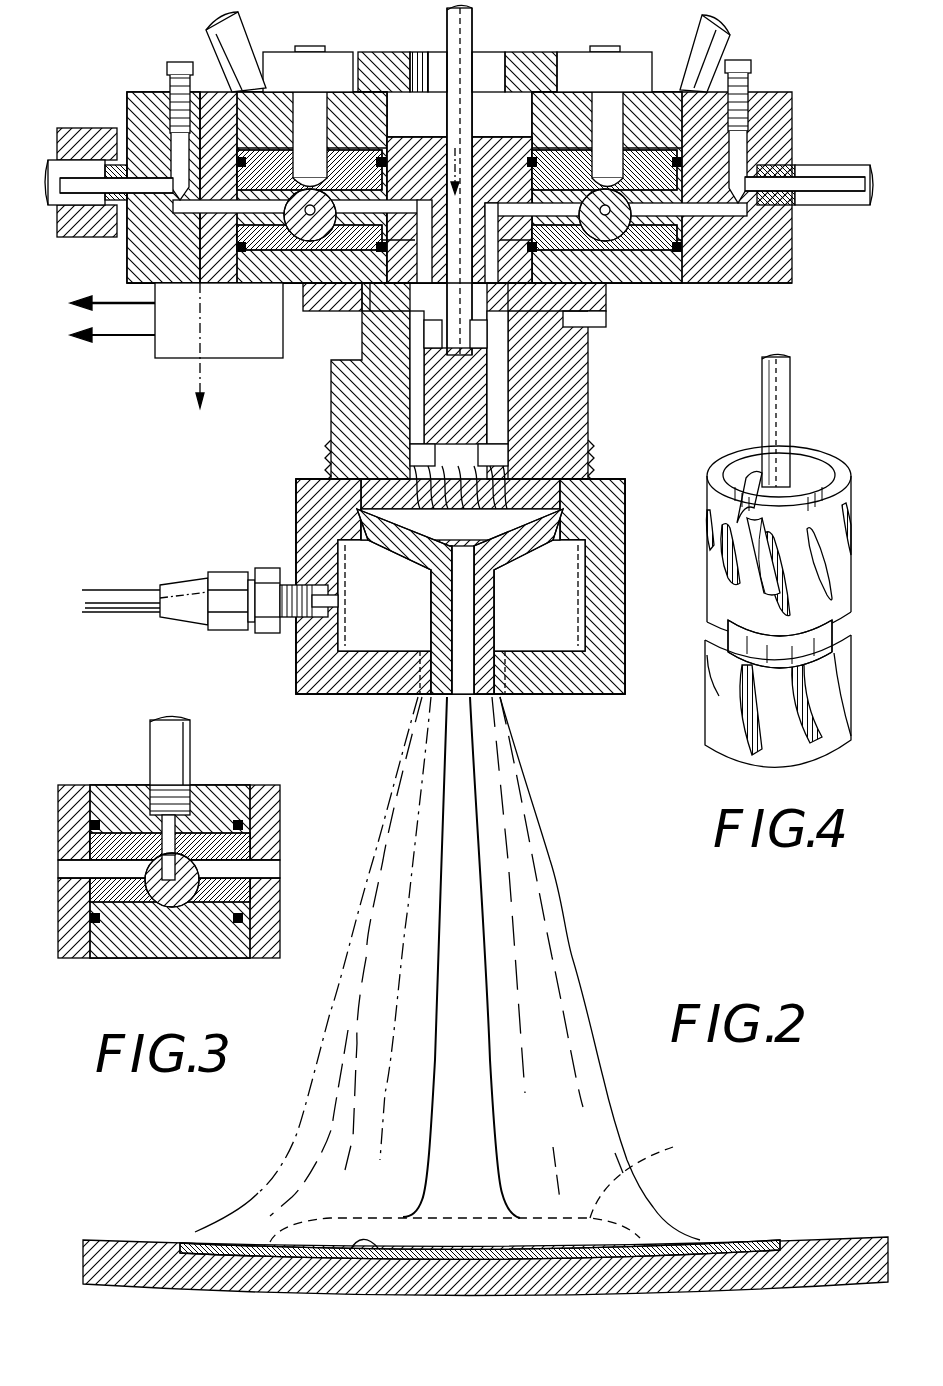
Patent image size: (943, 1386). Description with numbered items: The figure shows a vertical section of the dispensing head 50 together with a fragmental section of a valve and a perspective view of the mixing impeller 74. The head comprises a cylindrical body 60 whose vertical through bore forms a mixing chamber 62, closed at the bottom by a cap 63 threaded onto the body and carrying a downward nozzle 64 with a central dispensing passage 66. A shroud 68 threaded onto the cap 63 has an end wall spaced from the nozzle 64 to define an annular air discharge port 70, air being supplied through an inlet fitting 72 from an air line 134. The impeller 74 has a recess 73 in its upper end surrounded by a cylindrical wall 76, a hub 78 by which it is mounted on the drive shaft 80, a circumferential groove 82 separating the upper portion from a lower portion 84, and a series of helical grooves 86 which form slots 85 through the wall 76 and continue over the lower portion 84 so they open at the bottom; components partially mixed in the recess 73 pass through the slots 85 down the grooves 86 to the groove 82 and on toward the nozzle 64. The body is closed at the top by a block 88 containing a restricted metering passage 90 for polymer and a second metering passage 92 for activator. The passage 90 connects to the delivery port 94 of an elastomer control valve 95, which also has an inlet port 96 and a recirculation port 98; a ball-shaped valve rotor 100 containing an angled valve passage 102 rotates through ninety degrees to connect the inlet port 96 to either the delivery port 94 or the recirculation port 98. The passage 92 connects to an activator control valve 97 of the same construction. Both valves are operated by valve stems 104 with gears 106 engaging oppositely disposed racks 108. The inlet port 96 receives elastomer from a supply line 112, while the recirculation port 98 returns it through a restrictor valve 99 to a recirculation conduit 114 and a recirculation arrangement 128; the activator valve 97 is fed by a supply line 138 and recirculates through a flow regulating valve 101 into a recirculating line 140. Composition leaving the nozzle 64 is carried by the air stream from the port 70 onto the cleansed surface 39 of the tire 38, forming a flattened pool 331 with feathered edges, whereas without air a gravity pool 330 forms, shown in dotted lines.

In FIG. 2, the tire 38 is at (705, 1330).
In FIG. 2, the cleansed surface 39 is at (365, 1252).
In FIG. 2, the dispensing head 50 is at (842, 84).
In FIG. 2, the cylindrical body 60 is at (410, 400).
In FIG. 2, the mixing chamber 62 is at (410, 440).
In FIG. 2, the cap 63 is at (420, 560).
In FIG. 2, the nozzle 64 is at (428, 612).
In FIG. 2, the dispensing passage 66 is at (448, 710).
In FIG. 2, the shroud 68 is at (296, 510).
In FIG. 2, the annular air discharge port 70 is at (500, 710).
In FIG. 2, the inlet fitting 72 is at (232, 632).
In FIG. 2, the recess 73 is at (425, 355).
In FIG. 4, the recess 73 is at (802, 435).
In FIG. 2, the impeller 74 is at (480, 510).
In FIG. 4, the impeller 74 is at (712, 410).
In FIG. 4, the cylindrical wall 76 is at (835, 460).
In FIG. 4, the hub 78 is at (832, 588).
In FIG. 2, the drive shaft 80 is at (460, 135).
In FIG. 4, the drive shaft 80 is at (792, 380).
In FIG. 4, the circumferential groove 82 is at (834, 625).
In FIG. 4, the lower portion 84 is at (852, 700).
In FIG. 4, the slots 85 is at (754, 558).
In FIG. 4, the helical grooves 86 is at (824, 538).
In FIG. 2, the manifold block 88 is at (435, 137).
In FIG. 2, the metering passage 90 is at (375, 320).
In FIG. 2, the second metering passage 92 is at (570, 330).
In FIG. 2, the delivery port 94 is at (350, 286).
In FIG. 3, the delivery port 94 is at (250, 892).
In FIG. 2, the elastomer control valve 95 is at (300, 283).
In FIG. 3, the inlet port 96 is at (185, 822).
In FIG. 2, the activator control valve 97 is at (636, 283).
In FIG. 2, the recirculation port 98 is at (300, 240).
In FIG. 3, the recirculation port 98 is at (130, 820).
In FIG. 2, the restrictor valve 99 is at (167, 82).
In FIG. 2, the valve rotor 100 is at (310, 240).
In FIG. 3, the valve rotor 100 is at (128, 955).
In FIG. 2, the flow regulating valve 101 is at (752, 75).
In FIG. 3, the angled valve passage 102 is at (165, 900).
In FIG. 2, the valve stems 104 is at (310, 46).
In FIG. 2, the gears 106 is at (395, 22).
In FIG. 2, the racks 108 is at (418, 52).
In FIG. 2, the supply line 112 is at (222, 22).
In FIG. 3, the supply line 112 is at (150, 740).
In FIG. 2, the recirculation conduit 114 is at (50, 160).
In FIG. 2, the outlet manifold 128 is at (175, 360).
In FIG. 2, the air line 134 is at (130, 588).
In FIG. 2, the supply line 138 is at (732, 38).
In FIG. 2, the recirculating line 140 is at (830, 165).
In FIG. 2, the pool 330 is at (502, 1188).
In FIG. 2, the flattened pool 331 is at (710, 1240).